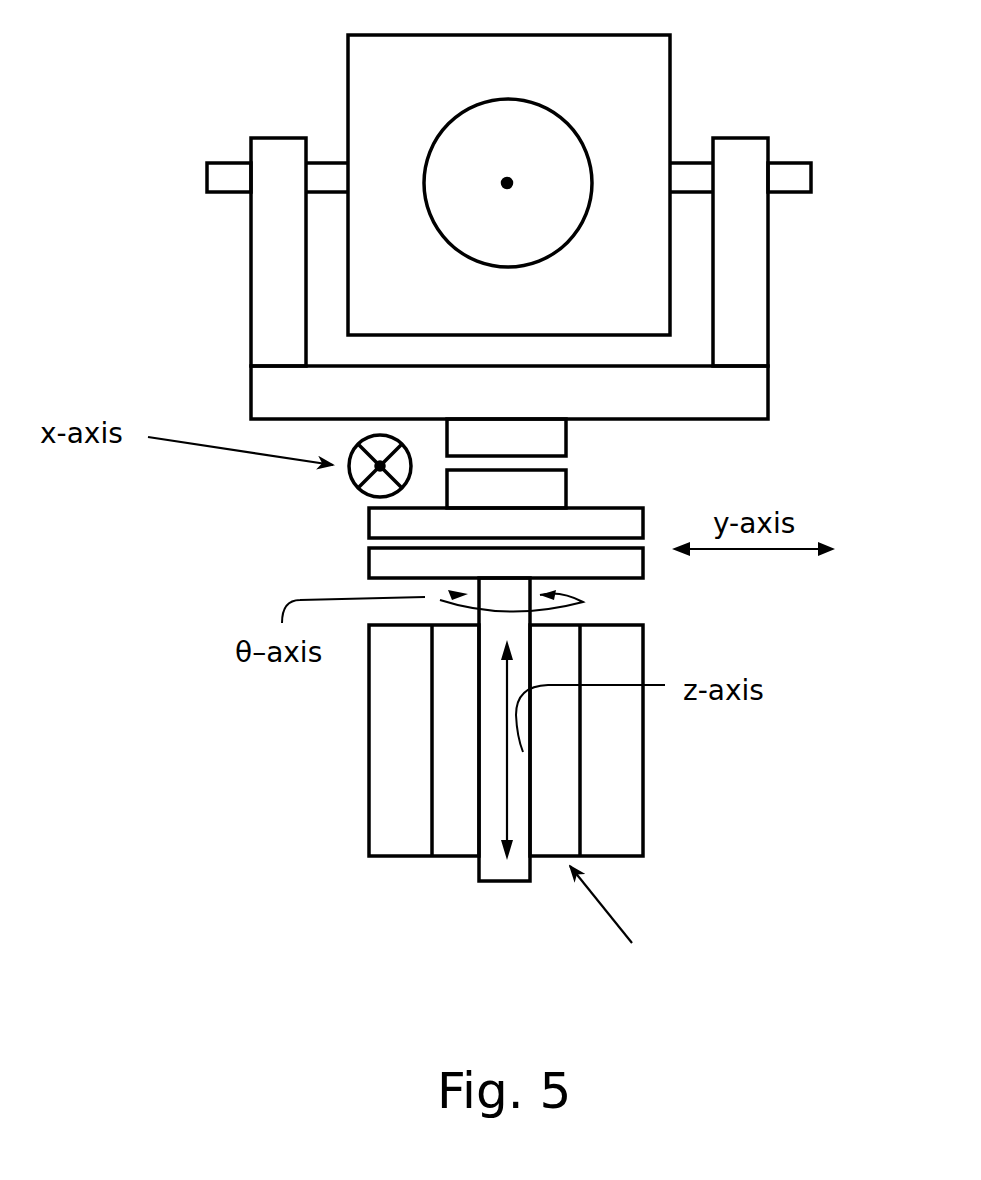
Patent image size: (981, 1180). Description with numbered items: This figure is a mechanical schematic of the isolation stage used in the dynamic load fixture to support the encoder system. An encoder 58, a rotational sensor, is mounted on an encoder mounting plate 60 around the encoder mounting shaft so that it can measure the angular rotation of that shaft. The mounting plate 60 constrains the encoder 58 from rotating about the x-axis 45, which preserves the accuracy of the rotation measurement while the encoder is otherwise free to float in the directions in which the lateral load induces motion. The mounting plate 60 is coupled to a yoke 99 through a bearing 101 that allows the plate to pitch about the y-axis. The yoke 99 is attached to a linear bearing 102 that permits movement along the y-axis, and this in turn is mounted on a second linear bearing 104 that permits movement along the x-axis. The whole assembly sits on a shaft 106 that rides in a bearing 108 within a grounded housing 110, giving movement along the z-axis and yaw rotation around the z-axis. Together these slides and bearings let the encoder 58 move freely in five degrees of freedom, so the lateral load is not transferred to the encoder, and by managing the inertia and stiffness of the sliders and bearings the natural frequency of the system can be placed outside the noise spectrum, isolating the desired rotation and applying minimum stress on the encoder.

The encoder mounting plate 60 is at (348, 65).
The encoder 58 is at (578, 130).
The x-axis 45 is at (497, 187).
The yoke 99 is at (750, 280).
The bearing 101 is at (788, 165).
The linear bearing 102 is at (595, 470).
The linear bearing 104 is at (369, 525).
The shaft 106 is at (458, 896).
The bearing 108 is at (617, 929).
The grounded housing 110 is at (369, 745).